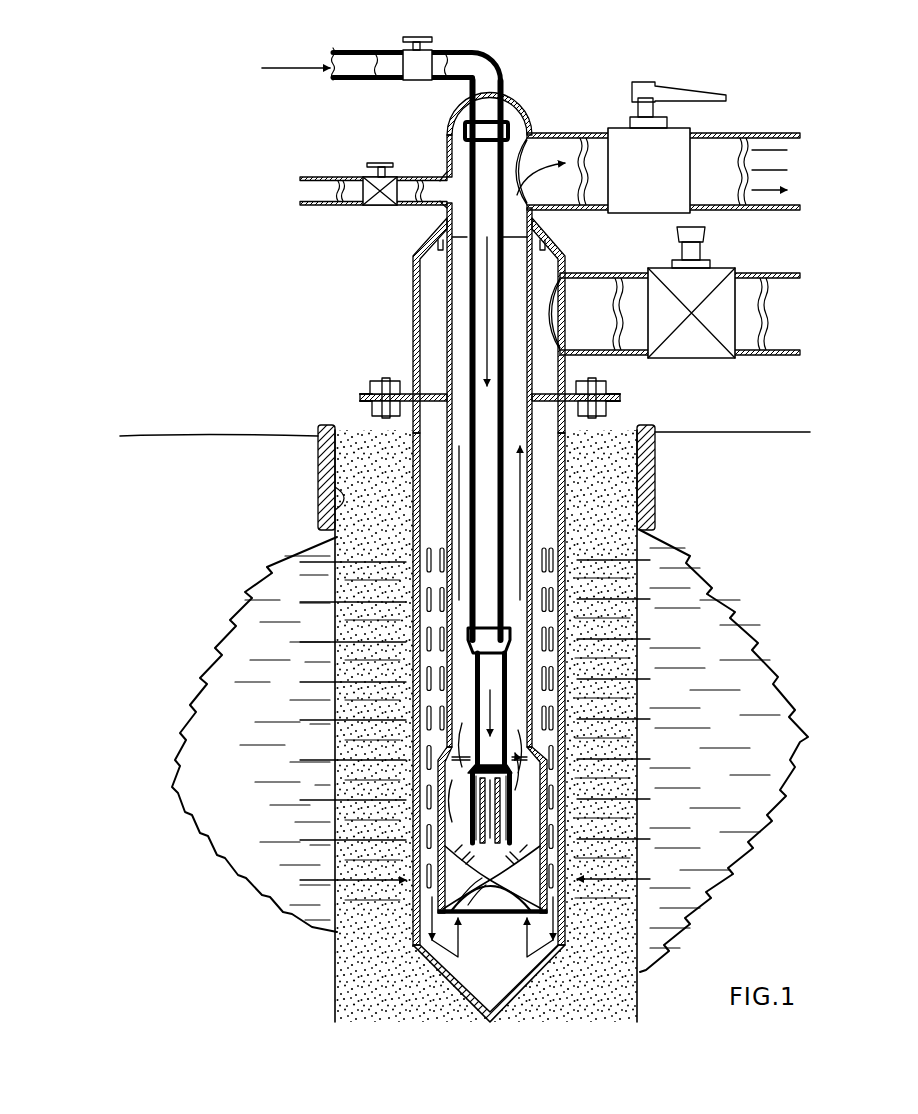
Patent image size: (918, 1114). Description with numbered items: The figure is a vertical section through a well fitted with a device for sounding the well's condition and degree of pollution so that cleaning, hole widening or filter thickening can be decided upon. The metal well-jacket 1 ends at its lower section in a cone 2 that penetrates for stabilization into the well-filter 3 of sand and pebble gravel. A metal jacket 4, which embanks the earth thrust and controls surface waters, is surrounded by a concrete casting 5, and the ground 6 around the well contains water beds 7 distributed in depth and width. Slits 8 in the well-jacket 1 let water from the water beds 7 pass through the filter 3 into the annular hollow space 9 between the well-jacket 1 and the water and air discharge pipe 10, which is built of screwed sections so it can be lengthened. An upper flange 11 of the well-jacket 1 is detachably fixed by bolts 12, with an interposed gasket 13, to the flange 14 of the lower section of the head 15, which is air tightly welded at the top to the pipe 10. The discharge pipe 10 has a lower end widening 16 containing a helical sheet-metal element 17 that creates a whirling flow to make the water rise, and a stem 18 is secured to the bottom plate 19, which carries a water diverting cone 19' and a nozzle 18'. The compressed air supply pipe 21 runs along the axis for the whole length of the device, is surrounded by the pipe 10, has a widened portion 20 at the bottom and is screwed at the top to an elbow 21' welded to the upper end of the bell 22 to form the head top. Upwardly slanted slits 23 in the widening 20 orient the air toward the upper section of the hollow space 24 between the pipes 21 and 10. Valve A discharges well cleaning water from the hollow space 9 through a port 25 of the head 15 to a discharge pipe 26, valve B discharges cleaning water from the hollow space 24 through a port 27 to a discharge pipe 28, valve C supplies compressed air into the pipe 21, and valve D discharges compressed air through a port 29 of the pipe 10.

The well-jacket 1 is at (560, 485).
The cone 2 is at (494, 1010).
The well-filter 3 is at (385, 998).
The metal jacket 4 is at (326, 515).
The concrete casting 5 is at (326, 463).
The ground 6 is at (218, 540).
The water beds 7 is at (220, 755).
The slits 8 is at (442, 548).
The annular hollow space 9 is at (549, 446).
The water and air discharge pipe 10 is at (448, 488).
The upper flange 11 is at (360, 408).
The bolts 12 is at (388, 378).
The gasket 13 is at (359, 398).
The flange 14 is at (369, 386).
The head 15 is at (413, 338).
The lower end widening 16 is at (461, 897).
The sheet-metal element 17 is at (523, 895).
The stem 18 is at (492, 878).
The nozzle 18' is at (482, 758).
The bottom plate 19 is at (498, 863).
The water diverting cone 19' is at (403, 903).
The widened portion 20 is at (514, 790).
The compressed air supply pipe 21 is at (576, 697).
The elbow 21' is at (404, 55).
The bell 22 is at (517, 103).
The slits 23 is at (468, 797).
The hollow space 24 is at (463, 318).
The port 25 is at (570, 321).
The discharge pipe 26 is at (767, 275).
The port 27 is at (522, 166).
The discharge pipe 28 is at (778, 132).
The port 29 is at (447, 192).
The valve A is at (674, 326).
The valve B is at (637, 188).
The valve C is at (415, 73).
The valve D is at (362, 187).